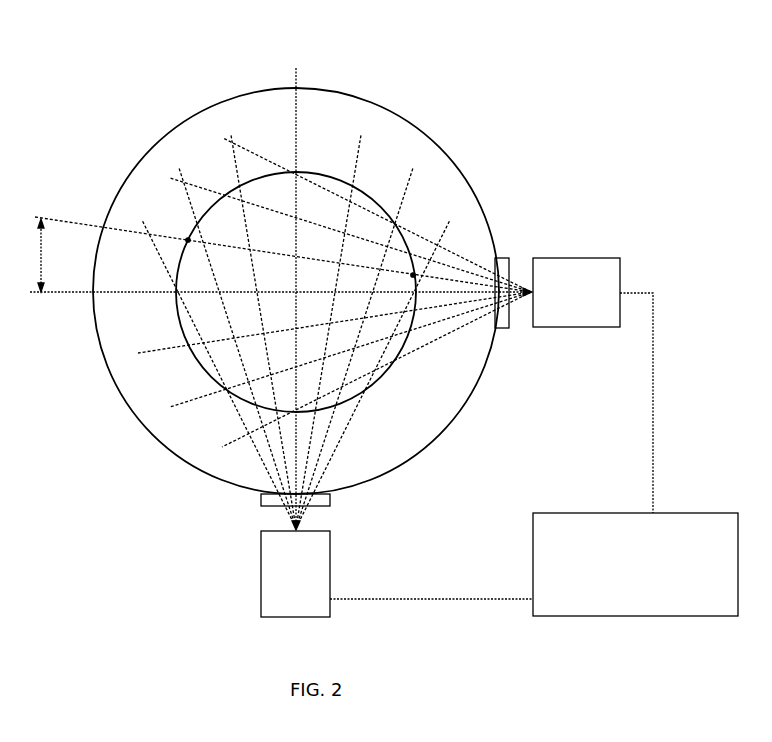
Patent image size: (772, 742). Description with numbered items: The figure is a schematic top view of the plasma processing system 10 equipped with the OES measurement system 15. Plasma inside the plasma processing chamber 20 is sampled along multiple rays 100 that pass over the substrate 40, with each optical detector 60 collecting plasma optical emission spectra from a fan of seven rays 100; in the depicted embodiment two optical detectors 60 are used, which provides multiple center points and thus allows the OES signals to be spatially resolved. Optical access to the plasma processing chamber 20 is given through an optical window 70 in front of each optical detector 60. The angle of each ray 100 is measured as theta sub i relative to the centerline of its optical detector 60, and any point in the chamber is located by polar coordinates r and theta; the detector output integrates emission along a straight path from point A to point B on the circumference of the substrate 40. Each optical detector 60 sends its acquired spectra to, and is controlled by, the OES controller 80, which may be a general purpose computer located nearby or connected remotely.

The plasma processing system 10 is at (78, 130).
The plasma processing chamber 20 is at (438, 142).
The substrate 40 is at (386, 374).
The rays 100 is at (115, 227).
The OES measurement system 15 is at (662, 228).
The optical window 70 is at (502, 328).
The optical detector 60 is at (571, 328).
The OES controller 80 is at (651, 575).